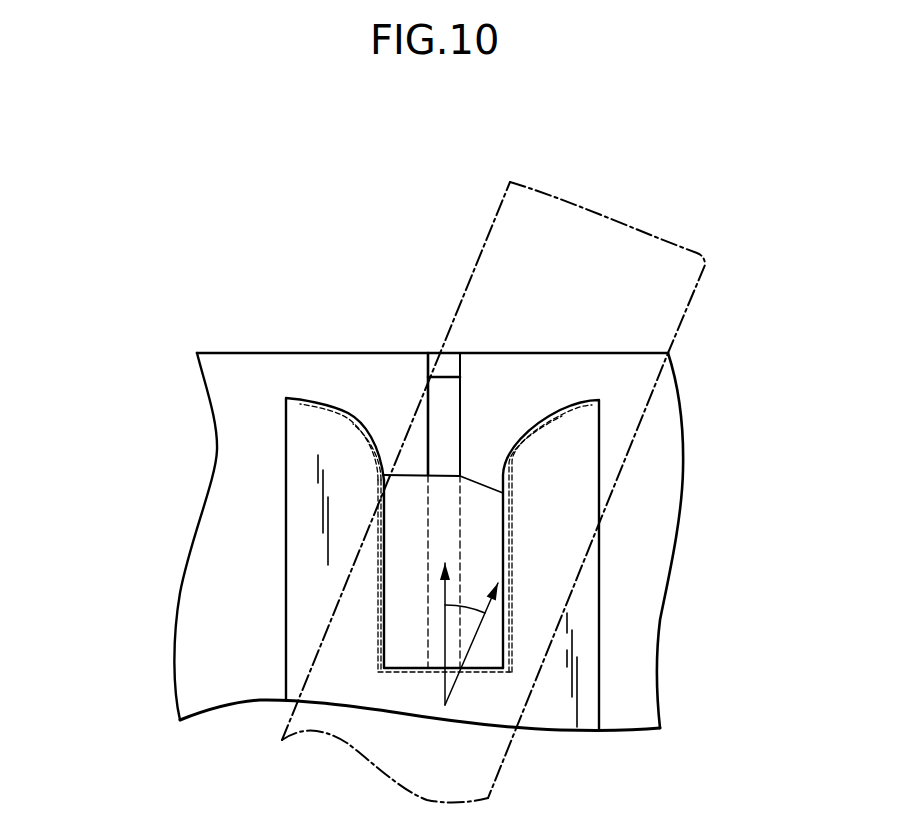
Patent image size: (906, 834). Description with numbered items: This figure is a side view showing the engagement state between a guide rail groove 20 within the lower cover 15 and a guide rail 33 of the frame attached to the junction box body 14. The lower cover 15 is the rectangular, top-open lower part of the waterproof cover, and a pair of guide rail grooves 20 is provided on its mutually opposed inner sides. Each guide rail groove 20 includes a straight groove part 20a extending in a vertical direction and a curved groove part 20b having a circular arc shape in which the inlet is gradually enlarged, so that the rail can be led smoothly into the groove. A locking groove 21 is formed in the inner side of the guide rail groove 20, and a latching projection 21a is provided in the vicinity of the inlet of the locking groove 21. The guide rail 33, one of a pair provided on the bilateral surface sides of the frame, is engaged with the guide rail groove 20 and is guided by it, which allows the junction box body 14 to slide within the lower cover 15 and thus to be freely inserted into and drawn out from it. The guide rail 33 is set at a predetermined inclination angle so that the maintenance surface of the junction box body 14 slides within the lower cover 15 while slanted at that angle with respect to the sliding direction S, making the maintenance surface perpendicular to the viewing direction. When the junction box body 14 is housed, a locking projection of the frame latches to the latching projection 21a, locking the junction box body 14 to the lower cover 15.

The junction box body 14 is at (690, 307).
The lower cover 15 is at (637, 647).
The guide rail groove 20 is at (97, 462).
The straight groove part 20a is at (386, 577).
The curved groove part 20b is at (355, 433).
The locking groove 21 is at (430, 433).
The latching projection 21a is at (447, 367).
The guide rail 33 is at (483, 542).
The sliding direction S is at (445, 622).